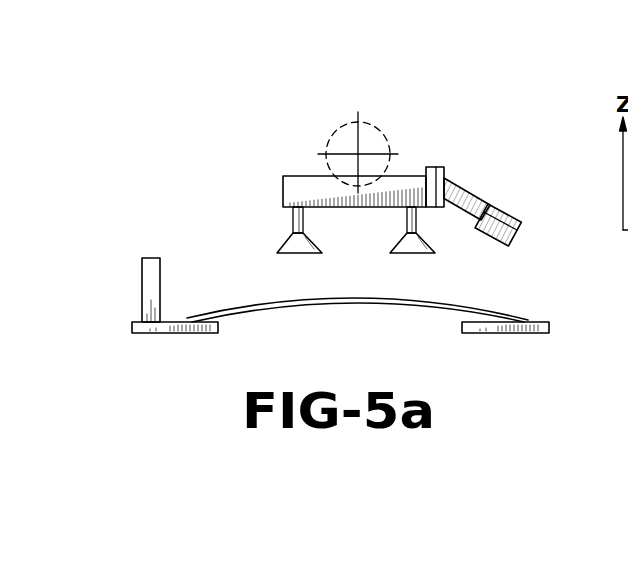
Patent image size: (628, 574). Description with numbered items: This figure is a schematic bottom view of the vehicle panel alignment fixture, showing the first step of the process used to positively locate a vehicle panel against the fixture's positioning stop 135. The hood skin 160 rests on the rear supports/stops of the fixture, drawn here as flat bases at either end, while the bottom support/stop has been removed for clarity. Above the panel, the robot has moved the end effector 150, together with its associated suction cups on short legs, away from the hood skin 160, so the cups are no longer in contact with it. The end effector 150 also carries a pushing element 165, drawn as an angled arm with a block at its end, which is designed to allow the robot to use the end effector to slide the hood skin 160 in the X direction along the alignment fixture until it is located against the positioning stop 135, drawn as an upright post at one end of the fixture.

The positioning stop 135 is at (152, 280).
The end effector 150 is at (440, 149).
The hood skin 160 is at (367, 304).
The pushing element 165 is at (503, 216).